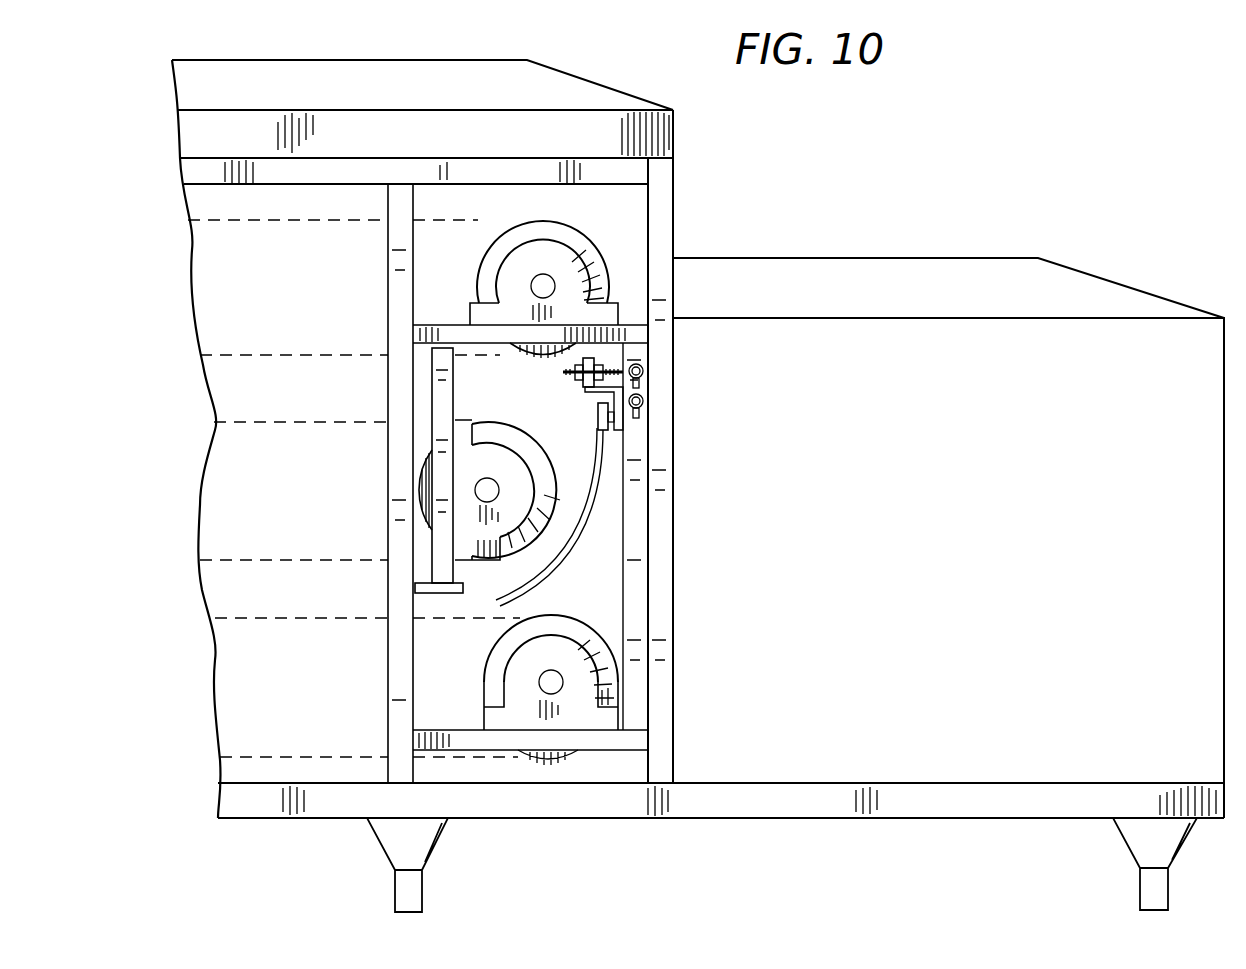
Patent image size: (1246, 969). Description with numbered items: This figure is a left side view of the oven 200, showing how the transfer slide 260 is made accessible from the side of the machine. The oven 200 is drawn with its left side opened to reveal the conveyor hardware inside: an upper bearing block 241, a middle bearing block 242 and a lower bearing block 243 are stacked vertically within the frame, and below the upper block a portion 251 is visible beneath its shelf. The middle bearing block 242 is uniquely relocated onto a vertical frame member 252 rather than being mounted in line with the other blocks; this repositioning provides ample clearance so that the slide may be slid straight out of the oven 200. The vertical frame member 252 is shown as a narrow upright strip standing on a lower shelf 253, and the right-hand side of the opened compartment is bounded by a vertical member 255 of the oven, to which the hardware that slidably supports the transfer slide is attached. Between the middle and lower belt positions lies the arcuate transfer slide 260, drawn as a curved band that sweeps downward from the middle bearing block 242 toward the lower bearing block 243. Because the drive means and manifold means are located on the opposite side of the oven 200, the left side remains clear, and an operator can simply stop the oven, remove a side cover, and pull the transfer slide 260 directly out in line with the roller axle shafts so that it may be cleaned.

The oven 200 is at (1002, 192).
The upper pulley wheel 241 is at (587, 248).
The middle bearing block 242 is at (500, 560).
The lower pulley wheel 243 is at (582, 670).
The pulley lower portion 251 is at (553, 345).
The vertical frame member 252 is at (450, 400).
The lower shelf 253 is at (462, 737).
The vertical member 255 is at (643, 526).
The transfer slide 260 is at (578, 525).